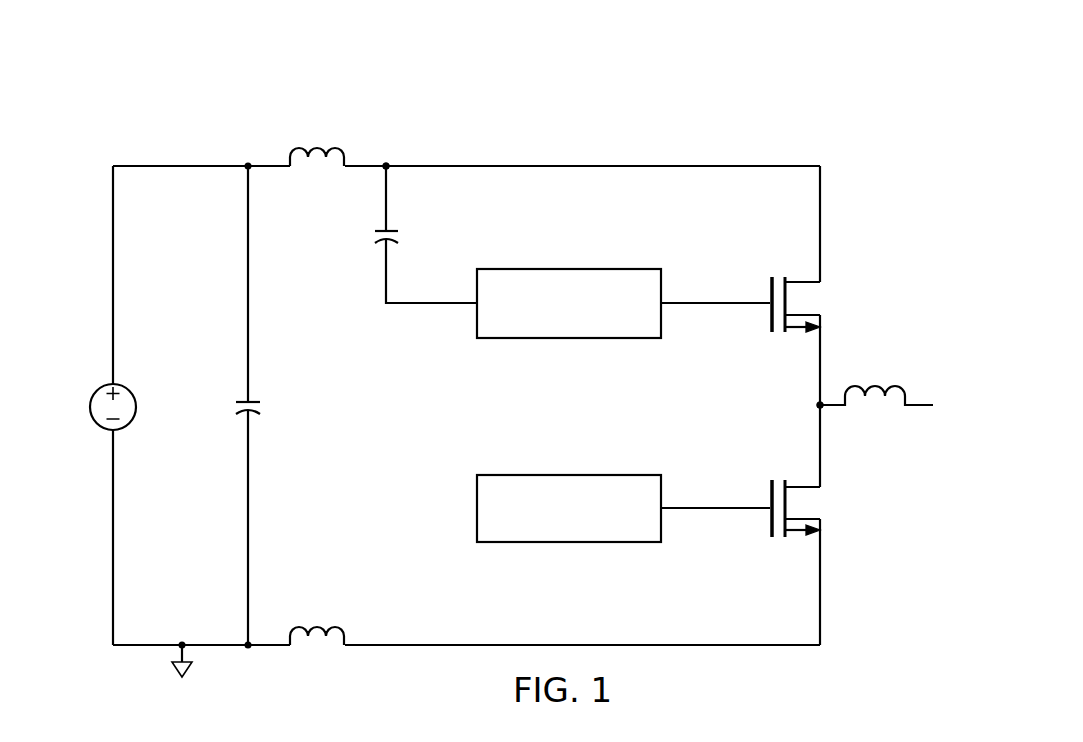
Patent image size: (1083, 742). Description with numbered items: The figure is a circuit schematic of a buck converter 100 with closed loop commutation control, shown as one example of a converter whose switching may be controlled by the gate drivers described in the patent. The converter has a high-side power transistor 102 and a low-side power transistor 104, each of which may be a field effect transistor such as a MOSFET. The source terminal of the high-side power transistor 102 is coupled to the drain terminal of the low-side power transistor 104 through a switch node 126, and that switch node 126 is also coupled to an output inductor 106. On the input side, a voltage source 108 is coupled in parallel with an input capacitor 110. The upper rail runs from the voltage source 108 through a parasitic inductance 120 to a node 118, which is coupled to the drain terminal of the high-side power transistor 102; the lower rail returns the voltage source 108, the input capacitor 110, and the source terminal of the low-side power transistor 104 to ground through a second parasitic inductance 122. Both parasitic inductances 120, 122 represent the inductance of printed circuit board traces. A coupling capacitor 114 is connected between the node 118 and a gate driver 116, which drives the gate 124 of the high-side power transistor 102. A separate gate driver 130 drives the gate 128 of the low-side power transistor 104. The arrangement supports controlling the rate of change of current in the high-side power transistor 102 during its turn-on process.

The buck converter 100 is at (628, 102).
The high-side power transistor 102 is at (770, 321).
The low-side power transistor 104 is at (770, 526).
The output inductor 106 is at (876, 392).
The voltage source 108 is at (88, 409).
The input capacitor 110 is at (236, 409).
The coupling capacitor 114 is at (372, 238).
The gate driver 116 is at (570, 268).
The node 118 is at (391, 170).
The parasitic inductance 120 is at (318, 150).
The parasitic inductance 122 is at (318, 630).
The gate 124 is at (764, 302).
The switch node 126 is at (822, 409).
The gate 128 is at (764, 507).
The gate driver 130 is at (570, 545).